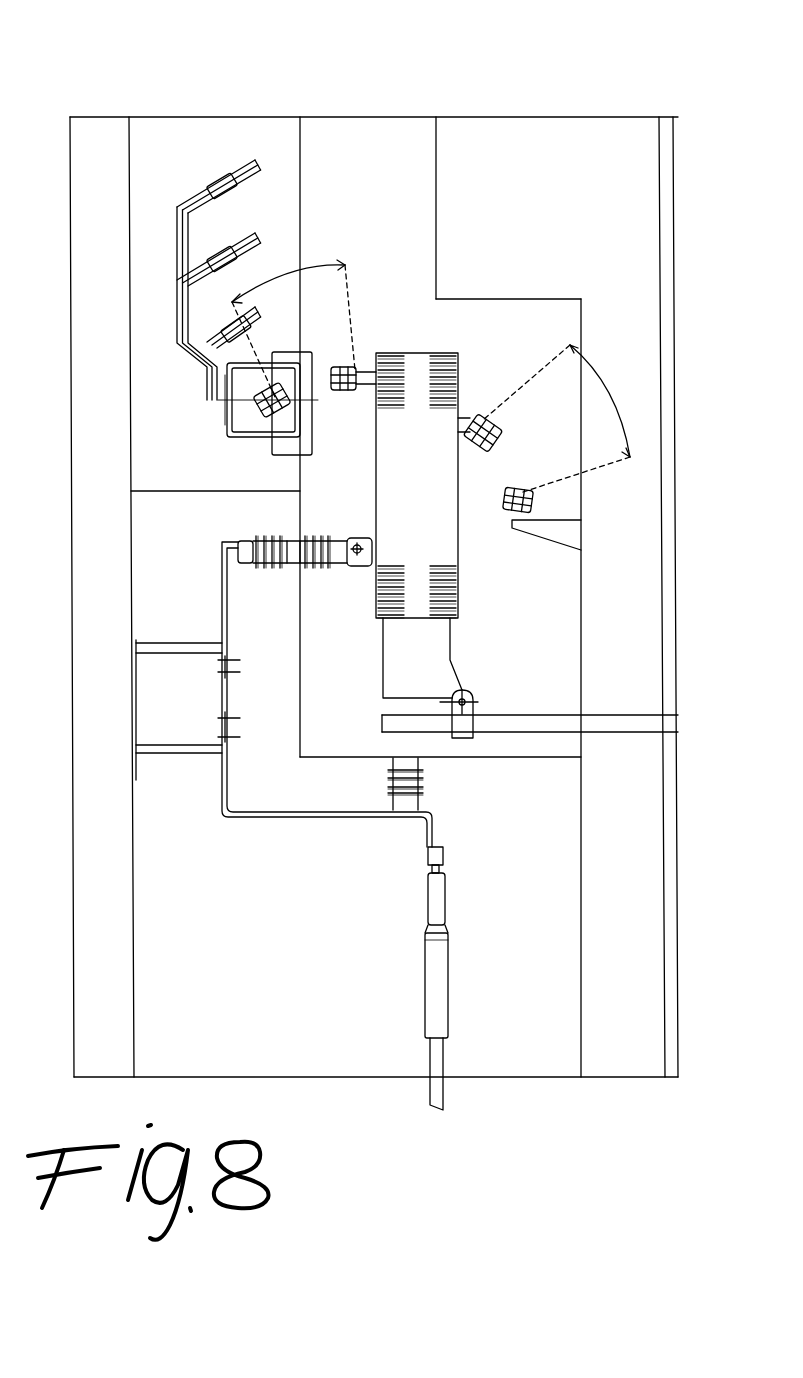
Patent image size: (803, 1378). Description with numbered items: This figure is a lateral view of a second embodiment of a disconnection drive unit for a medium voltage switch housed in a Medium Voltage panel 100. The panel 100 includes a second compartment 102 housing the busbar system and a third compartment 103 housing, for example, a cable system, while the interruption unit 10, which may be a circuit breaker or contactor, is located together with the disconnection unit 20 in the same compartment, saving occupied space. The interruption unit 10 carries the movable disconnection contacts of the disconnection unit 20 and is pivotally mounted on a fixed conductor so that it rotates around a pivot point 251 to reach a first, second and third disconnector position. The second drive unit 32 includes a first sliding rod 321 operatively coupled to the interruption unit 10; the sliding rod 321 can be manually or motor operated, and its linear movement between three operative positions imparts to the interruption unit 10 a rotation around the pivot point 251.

The Medium Voltage panel 100 is at (632, 78).
The second compartment 102 is at (253, 310).
The third compartment 103 is at (215, 1057).
The disconnection unit 20 is at (495, 343).
The interruption unit 10 is at (426, 490).
The pivot point 251 is at (357, 560).
The second drive unit 32 is at (495, 710).
The first sliding rod 321 is at (605, 722).